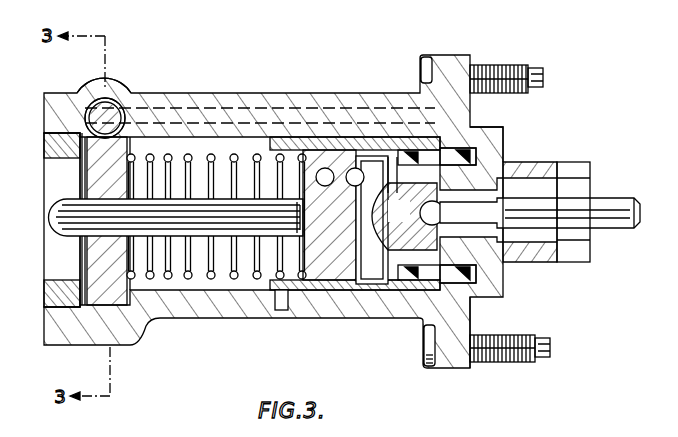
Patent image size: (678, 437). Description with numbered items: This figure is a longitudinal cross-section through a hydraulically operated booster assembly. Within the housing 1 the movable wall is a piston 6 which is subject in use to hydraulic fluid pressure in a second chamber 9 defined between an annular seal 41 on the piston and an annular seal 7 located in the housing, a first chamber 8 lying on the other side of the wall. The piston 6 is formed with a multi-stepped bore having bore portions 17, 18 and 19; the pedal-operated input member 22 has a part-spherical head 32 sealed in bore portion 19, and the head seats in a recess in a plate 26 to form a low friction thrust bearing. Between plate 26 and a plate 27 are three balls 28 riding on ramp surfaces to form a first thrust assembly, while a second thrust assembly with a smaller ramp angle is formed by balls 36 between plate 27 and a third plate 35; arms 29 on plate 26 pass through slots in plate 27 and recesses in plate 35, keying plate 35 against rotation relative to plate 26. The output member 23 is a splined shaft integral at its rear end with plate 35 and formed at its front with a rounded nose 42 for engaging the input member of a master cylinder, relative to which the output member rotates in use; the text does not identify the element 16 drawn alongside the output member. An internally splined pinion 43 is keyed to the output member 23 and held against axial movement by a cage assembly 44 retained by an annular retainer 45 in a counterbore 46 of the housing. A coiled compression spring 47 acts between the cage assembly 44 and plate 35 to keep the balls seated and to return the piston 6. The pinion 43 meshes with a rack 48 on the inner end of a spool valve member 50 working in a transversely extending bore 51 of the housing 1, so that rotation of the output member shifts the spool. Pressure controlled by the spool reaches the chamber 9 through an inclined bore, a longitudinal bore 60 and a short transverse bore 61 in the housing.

The first housing part 1 is at (227, 307).
The piston 6 is at (532, 173).
The annular seal 7 is at (480, 297).
The first chamber 8 is at (202, 167).
The second chamber 9 is at (503, 129).
The push rod 16 is at (598, 215).
The bore portion 17 is at (340, 168).
The bore portion 18 is at (396, 178).
The bore portion 19 is at (393, 173).
The input member 22 is at (394, 290).
The output member 23 is at (63, 219).
The plate 26 is at (375, 290).
The plate 27 is at (346, 300).
The balls 28 is at (357, 140).
The arms 29 is at (370, 290).
The part-spherical head 32 is at (389, 221).
The third plate 35 is at (318, 300).
The balls 36 is at (317, 147).
The annular seal 41 is at (405, 285).
The rounded nose 42 is at (52, 237).
The pinion 43 is at (102, 305).
The cage assembly 44 is at (82, 180).
The annular retainer 45 is at (55, 165).
The counterbore 46 is at (64, 130).
The coiled compression spring 47 is at (170, 298).
The rack 48 is at (106, 100).
The spool valve member 50 is at (80, 110).
The transversely extending bore 51 is at (113, 108).
The longitudinal bore 60 is at (243, 118).
The transverse bore 61 is at (437, 143).